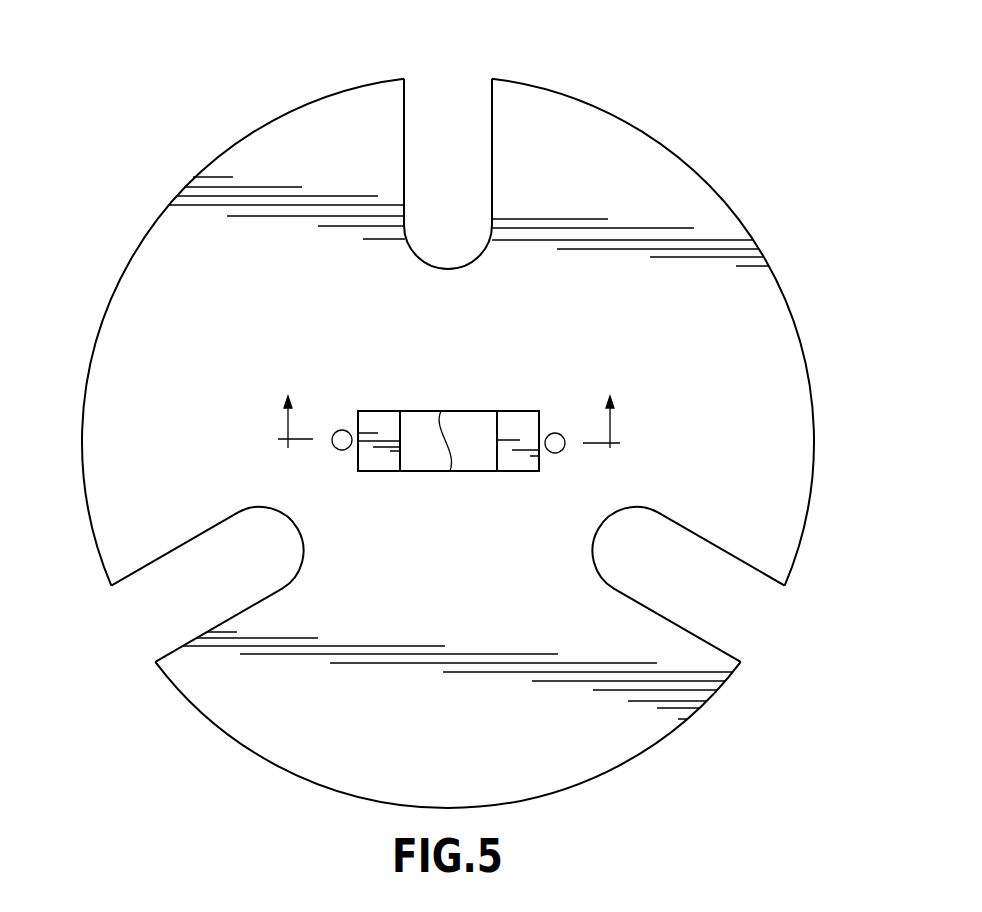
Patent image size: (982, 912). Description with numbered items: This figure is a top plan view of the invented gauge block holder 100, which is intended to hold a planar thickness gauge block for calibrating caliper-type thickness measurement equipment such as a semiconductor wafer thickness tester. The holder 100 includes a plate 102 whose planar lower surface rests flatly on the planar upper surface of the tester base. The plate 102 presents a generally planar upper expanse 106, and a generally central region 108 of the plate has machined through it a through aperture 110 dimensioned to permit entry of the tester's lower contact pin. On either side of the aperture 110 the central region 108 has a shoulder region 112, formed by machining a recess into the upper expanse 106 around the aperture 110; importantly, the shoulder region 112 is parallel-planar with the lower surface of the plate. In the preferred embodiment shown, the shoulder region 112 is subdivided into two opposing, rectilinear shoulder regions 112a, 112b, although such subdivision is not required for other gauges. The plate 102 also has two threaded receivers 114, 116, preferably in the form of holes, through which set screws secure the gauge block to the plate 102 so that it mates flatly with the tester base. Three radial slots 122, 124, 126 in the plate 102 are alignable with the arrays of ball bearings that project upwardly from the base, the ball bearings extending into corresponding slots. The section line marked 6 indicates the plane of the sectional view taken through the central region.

The holder 100 is at (465, 408).
The plate 102 is at (806, 352).
The upper expanse 106 is at (553, 636).
The central region 108 is at (395, 533).
The through aperture 110 is at (441, 411).
The shoulder region 112 is at (510, 489).
The opposing shoulder region 112a is at (379, 427).
The opposing shoulder region 112b is at (518, 428).
The threaded receiver 114 is at (344, 451).
The threaded receiver 116 is at (556, 454).
The radial slot 122 is at (152, 610).
The radial slot 124 is at (443, 100).
The radial slot 126 is at (750, 619).
The section line 6- 6 is at (449, 427).